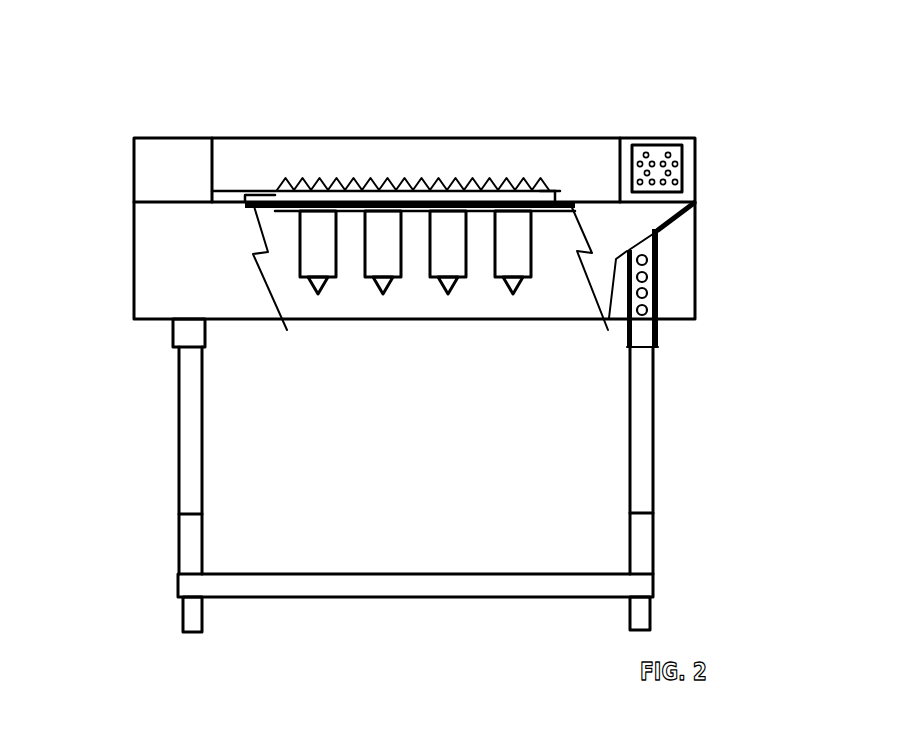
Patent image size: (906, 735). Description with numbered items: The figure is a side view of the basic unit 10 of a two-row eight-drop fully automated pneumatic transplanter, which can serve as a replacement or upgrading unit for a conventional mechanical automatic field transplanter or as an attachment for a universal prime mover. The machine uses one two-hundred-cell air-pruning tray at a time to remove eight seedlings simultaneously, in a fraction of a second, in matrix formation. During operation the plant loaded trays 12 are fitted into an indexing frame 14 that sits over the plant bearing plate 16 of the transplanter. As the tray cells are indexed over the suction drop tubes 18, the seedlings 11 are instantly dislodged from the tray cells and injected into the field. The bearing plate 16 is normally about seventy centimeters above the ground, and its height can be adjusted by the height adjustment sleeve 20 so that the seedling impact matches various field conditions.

The basic unit 10 is at (636, 40).
The seedlings 11 is at (413, 129).
The plant loaded trays 12 is at (336, 122).
The indexing frame 14 is at (607, 129).
The plant bearing plate 16 is at (311, 326).
The suction drop tubes 18 is at (378, 165).
The height adjustment sleeve 20 is at (708, 262).